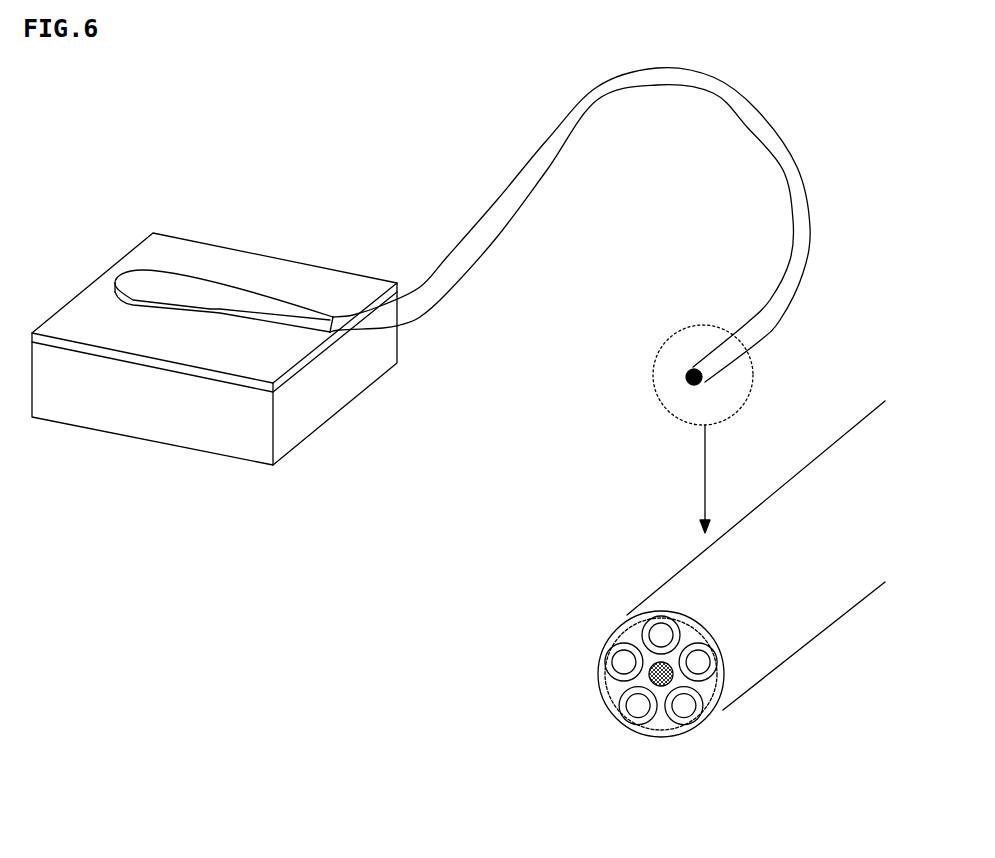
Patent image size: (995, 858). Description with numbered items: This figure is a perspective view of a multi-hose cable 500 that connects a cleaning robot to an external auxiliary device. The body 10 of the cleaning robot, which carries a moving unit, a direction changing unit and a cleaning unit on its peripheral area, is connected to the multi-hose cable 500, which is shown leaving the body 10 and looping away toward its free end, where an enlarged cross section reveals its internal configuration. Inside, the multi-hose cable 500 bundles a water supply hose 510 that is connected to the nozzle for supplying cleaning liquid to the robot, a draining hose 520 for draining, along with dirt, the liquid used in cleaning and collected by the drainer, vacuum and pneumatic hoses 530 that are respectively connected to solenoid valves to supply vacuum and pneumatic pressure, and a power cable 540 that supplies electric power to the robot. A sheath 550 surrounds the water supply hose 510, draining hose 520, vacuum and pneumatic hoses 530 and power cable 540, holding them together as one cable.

The body 10 is at (247, 270).
The multi-hose cable 500 is at (838, 453).
The water supply hose 510 is at (622, 657).
The draining hose 520 is at (637, 702).
The vacuum and pneumatic hoses 530 is at (692, 710).
The power cable 540 is at (670, 682).
The sheath 550 is at (724, 710).